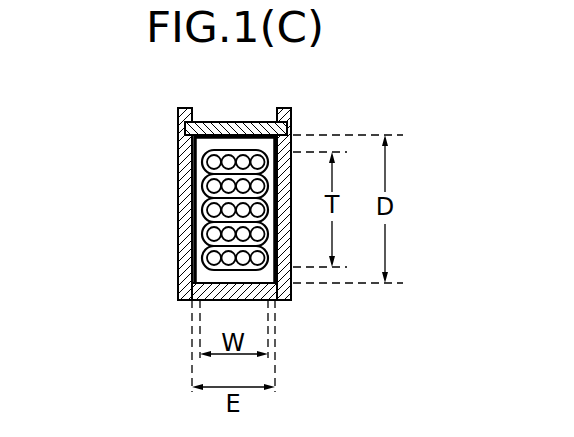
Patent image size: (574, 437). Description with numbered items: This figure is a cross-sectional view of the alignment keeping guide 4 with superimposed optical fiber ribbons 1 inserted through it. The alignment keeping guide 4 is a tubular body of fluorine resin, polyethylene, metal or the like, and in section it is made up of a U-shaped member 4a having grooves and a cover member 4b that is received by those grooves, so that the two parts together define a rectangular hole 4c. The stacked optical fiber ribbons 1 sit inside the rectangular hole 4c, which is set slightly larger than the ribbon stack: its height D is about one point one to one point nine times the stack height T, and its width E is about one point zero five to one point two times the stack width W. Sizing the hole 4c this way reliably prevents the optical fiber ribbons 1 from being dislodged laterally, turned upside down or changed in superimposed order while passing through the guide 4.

The optical fiber ribbons 1 is at (251, 150).
The alignment keeping guide 4 is at (110, 100).
The U-shaped member 4a is at (178, 151).
The cover member 4b is at (222, 121).
The rectangular hole 4c is at (180, 200).